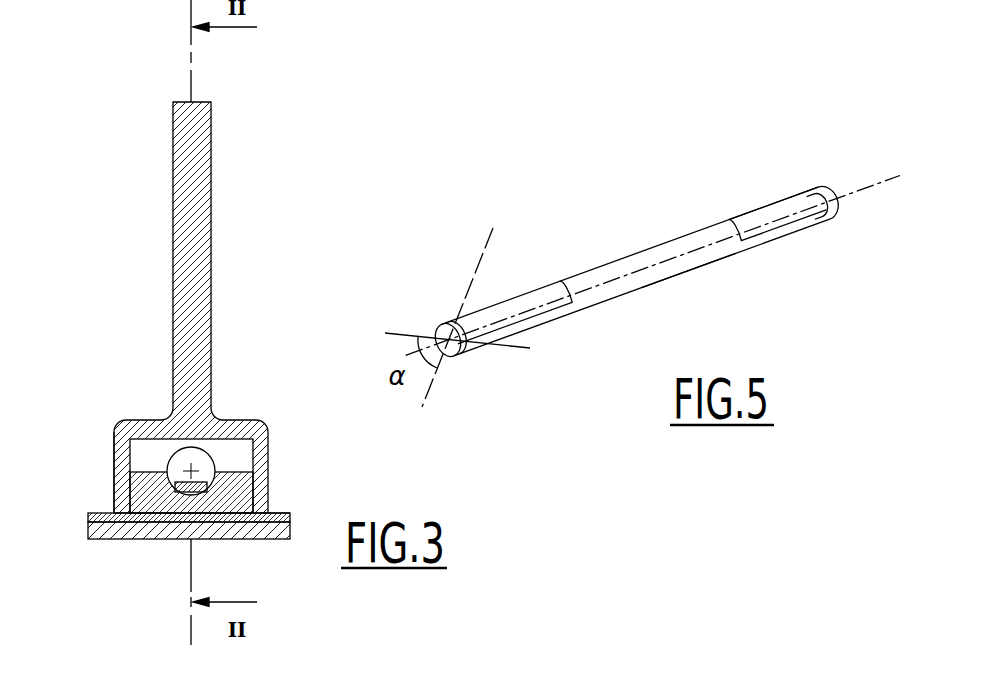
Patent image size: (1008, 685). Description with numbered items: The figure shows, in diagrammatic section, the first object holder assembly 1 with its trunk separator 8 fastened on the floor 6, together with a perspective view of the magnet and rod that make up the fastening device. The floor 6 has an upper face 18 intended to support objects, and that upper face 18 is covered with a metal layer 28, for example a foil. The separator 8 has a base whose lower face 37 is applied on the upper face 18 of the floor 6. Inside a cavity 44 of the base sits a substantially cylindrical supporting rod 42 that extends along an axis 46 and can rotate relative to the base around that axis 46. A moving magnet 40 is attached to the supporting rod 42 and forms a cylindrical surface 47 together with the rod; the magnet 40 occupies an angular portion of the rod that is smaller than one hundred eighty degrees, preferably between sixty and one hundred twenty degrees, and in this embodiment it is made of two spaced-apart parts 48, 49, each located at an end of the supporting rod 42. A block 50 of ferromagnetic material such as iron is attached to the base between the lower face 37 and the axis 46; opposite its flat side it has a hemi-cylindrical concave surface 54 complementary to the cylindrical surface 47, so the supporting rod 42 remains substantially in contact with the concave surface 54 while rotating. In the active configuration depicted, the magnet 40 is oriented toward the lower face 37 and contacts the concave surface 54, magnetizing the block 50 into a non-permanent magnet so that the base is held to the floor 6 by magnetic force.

In FIG. 3, the first object holder assembly 1 is at (190, 360).
In FIG. 3, the floor 6 is at (230, 542).
In FIG. 3, the trunk separator 8 is at (230, 251).
In FIG. 3, the upper face 18 is at (277, 512).
In FIG. 3, the metal layer 28 is at (296, 505).
In FIG. 3, the lower face 37 is at (122, 515).
In FIG. 3, the moving magnet 40 is at (184, 505).
In FIG. 5, the moving magnet 40 is at (735, 185).
In FIG. 3, the supporting rod 42 is at (193, 470).
In FIG. 5, the supporting rod 42 is at (625, 228).
In FIG. 3, the cavity 44 is at (137, 452).
In FIG. 3, the axis 46 is at (195, 470).
In FIG. 5, the axis 46 is at (858, 183).
In FIG. 5, the cylindrical surface 47 is at (690, 297).
In FIG. 5, the first magnet part 48 is at (508, 310).
In FIG. 5, the second magnet part 49 is at (777, 212).
In FIG. 3, the block of ferromagnetic material 50 is at (116, 495).
In FIG. 3, the concave surface 54 is at (168, 465).